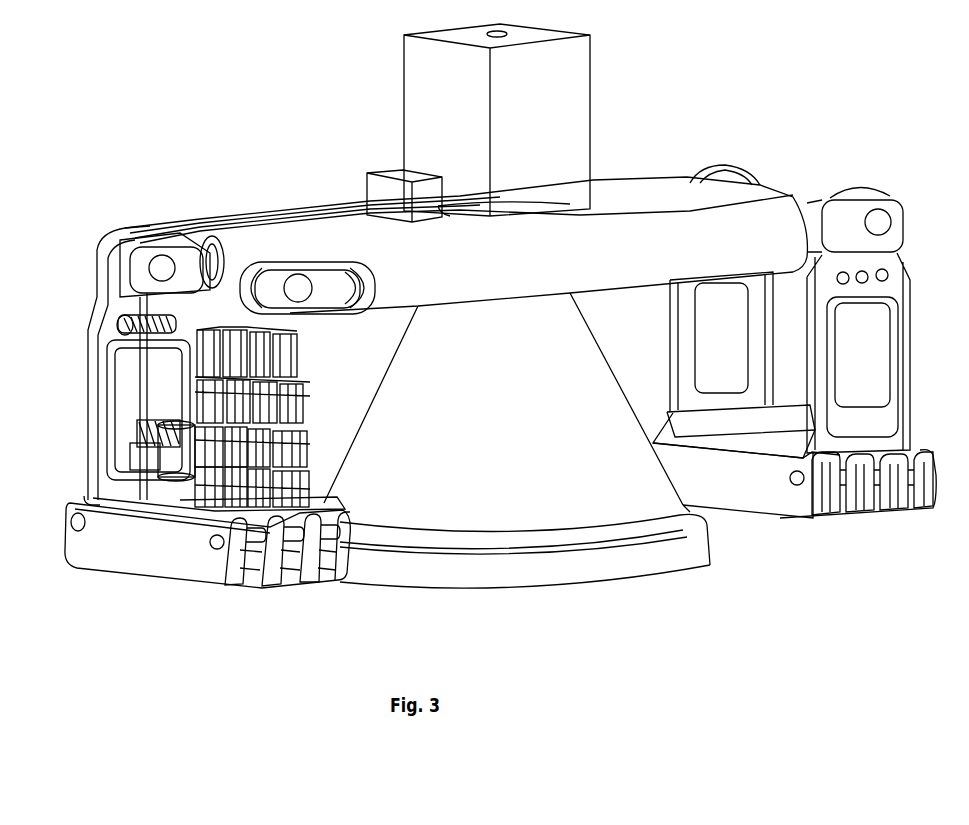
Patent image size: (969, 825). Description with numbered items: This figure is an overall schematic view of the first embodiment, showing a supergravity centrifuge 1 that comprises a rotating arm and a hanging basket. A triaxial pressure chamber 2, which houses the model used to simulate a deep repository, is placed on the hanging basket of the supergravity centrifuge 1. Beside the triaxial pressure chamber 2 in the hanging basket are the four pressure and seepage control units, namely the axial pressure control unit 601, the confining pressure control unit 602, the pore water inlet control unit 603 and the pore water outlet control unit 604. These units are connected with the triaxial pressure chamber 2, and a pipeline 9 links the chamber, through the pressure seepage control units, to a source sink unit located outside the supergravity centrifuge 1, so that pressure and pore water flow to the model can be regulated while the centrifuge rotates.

The supergravity centrifuge 1 is at (520, 258).
The triaxial pressure chamber 2 is at (173, 447).
The pipeline 9 is at (143, 397).
The axial pressure control unit 601 is at (135, 517).
The confining pressure control unit 602 is at (188, 524).
The pore water inlet control unit 603 is at (123, 252).
The pore water outlet control unit 604 is at (260, 337).